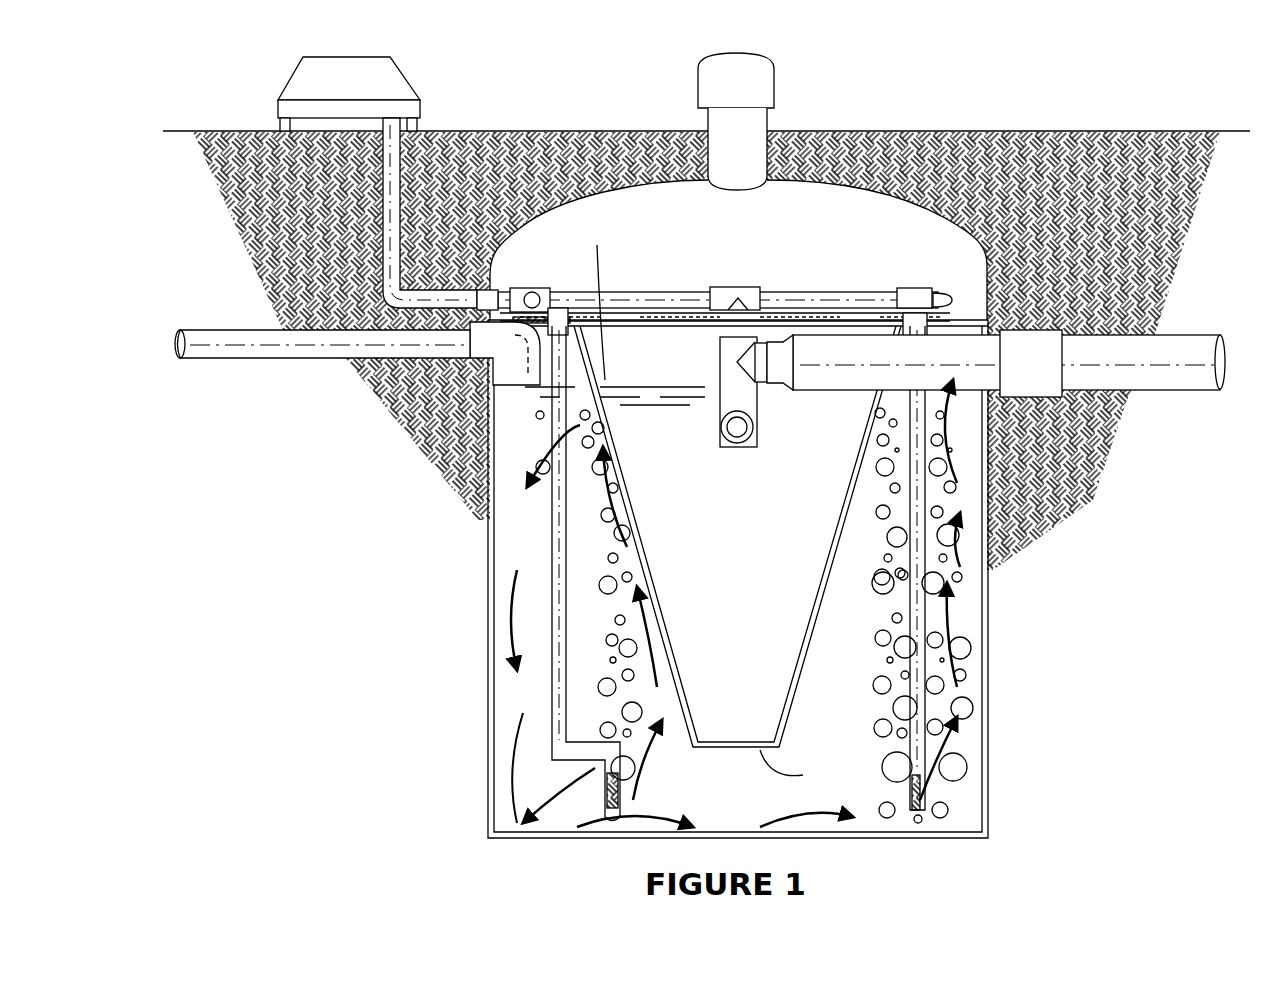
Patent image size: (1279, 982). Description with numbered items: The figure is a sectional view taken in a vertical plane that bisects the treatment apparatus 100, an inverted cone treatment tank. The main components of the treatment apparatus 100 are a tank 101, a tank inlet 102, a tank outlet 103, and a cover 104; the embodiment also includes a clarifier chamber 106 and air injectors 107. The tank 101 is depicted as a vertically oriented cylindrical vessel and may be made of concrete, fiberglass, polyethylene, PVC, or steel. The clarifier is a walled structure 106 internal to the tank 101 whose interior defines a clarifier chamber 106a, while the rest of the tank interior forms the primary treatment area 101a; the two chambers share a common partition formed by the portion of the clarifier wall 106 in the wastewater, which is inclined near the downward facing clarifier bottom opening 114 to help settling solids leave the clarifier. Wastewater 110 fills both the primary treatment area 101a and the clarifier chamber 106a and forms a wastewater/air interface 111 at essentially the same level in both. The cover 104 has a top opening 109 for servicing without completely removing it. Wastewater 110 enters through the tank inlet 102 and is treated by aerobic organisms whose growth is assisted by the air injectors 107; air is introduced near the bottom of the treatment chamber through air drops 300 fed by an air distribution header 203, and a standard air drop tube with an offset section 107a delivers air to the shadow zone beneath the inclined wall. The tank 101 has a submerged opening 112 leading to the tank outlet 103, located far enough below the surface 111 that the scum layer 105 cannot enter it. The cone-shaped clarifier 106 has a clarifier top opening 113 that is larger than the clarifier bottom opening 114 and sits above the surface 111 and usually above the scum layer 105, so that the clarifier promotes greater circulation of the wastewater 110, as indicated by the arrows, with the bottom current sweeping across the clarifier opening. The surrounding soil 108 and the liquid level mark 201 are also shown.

The treatment apparatus 100 is at (1207, 117).
The tank 101 is at (988, 645).
The primary treatment area 101a is at (715, 805).
The tank inlet 102 is at (493, 380).
The tank outlet 103 is at (957, 390).
The cover 104 is at (940, 210).
The scum layer 105 is at (665, 372).
The clarifier chamber wall 106 is at (803, 665).
The clarifier chamber 106a is at (741, 577).
The air injectors 107 is at (557, 753).
The offset section 107a is at (510, 808).
The soil backfill 108 is at (987, 303).
The top opening 109 is at (770, 131).
The wastewater 110 is at (620, 617).
The wastewater/air interface 111 is at (615, 298).
The submerged opening 112 is at (748, 427).
The clarifier top opening 113 is at (612, 335).
The clarifier bottom opening 114 is at (808, 769).
The liquid level 201 is at (630, 377).
The air distribution header 203 is at (848, 300).
The air drops 300 is at (557, 575).